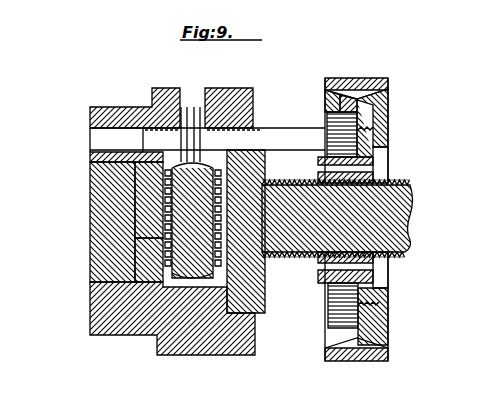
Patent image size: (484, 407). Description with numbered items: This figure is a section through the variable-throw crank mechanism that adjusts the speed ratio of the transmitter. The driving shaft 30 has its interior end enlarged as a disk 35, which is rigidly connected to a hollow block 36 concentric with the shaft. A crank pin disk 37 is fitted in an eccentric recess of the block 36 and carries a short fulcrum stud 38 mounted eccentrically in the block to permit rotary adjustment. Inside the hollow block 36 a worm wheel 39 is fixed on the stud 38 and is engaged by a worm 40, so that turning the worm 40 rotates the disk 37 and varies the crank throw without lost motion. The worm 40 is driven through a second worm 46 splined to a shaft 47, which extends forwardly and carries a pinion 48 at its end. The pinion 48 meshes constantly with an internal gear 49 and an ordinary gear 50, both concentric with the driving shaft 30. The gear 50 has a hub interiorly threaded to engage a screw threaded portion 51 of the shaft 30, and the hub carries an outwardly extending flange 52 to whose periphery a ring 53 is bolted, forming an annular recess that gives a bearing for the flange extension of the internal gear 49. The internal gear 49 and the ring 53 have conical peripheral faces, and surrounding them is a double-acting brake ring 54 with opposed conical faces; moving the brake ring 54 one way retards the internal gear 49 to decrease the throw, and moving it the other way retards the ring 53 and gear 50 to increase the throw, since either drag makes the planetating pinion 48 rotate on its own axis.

The driving shaft 30 is at (412, 211).
The disk 35 is at (265, 296).
The hollow block 36 is at (226, 355).
The crank pin disk 37 is at (90, 183).
The fulcrum stud 38 is at (148, 225).
The worm wheel 39 is at (163, 282).
The worm 40 is at (150, 220).
The second worm 46 is at (187, 108).
The shaft 47 is at (288, 125).
The pinion 48 is at (337, 142).
The internal gear 49 is at (340, 88).
The gear 50 is at (375, 282).
The screw threaded portion 51 is at (410, 182).
The flange 52 is at (372, 157).
The ring 53 is at (388, 100).
The brake ring 54 is at (377, 78).